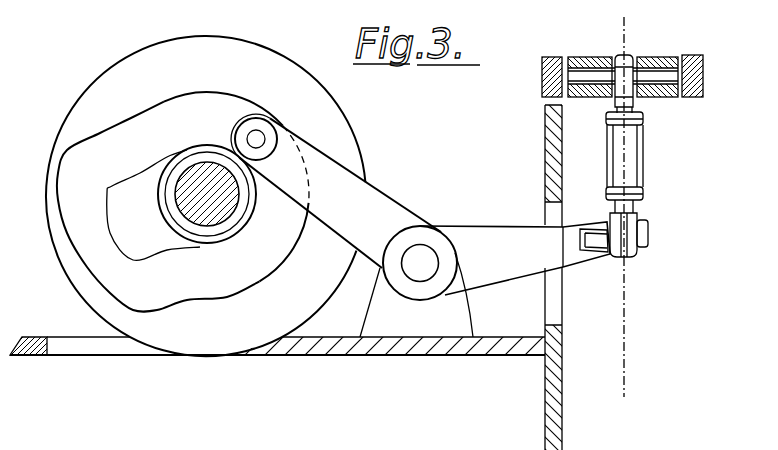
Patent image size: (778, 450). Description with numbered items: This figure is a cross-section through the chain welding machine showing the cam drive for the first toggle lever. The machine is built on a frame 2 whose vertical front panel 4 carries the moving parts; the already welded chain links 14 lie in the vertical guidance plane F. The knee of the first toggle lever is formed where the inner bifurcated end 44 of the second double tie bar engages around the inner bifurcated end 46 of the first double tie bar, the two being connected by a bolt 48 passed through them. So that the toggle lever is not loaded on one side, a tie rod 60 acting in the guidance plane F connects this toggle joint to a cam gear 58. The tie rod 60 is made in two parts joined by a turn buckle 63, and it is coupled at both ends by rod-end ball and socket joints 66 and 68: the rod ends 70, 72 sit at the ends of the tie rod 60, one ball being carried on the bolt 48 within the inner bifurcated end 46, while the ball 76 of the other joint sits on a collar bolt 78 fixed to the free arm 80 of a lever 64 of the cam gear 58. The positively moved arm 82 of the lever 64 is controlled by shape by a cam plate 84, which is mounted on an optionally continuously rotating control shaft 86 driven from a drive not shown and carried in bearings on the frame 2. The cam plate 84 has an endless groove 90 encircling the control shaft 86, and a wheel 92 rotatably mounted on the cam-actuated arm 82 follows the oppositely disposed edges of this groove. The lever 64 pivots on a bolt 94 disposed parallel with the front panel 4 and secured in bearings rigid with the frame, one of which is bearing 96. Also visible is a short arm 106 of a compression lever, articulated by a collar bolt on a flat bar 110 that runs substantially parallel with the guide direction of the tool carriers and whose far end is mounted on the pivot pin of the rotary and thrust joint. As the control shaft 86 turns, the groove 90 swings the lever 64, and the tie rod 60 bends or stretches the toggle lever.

The frame 2 is at (303, 277).
The vertical front panel 4 is at (555, 385).
The already welded chain links 14 is at (617, 198).
The inner bifurcated end of the second double tie bar 44 is at (668, 57).
The inner bifurcated end of the first double tie bar 46 is at (600, 55).
The bolt 48 is at (580, 57).
The cam gear 58 is at (343, 182).
The tie rod 60 is at (650, 142).
The turn buckle 63 is at (628, 177).
The lever 64 is at (483, 294).
The rod-end ball and socket joint 66 is at (634, 52).
The rod-end ball and socket joint 68 is at (634, 266).
The rod end 70 is at (623, 85).
The rod end 72 is at (627, 257).
The ball 76 is at (637, 250).
The collar bolt 78 is at (645, 223).
The free arm 80 is at (515, 282).
The positively moved arm 82 is at (378, 208).
The cam plate 84 is at (245, 50).
The control shaft 86 is at (218, 202).
The endless groove 90 is at (136, 118).
The wheel 92 is at (238, 108).
The bolt 94 is at (421, 252).
The bearing 96 is at (412, 293).
The short arm 106 is at (277, 393).
The flat bar 110 is at (542, 82).
The guidance plane F is at (627, 363).